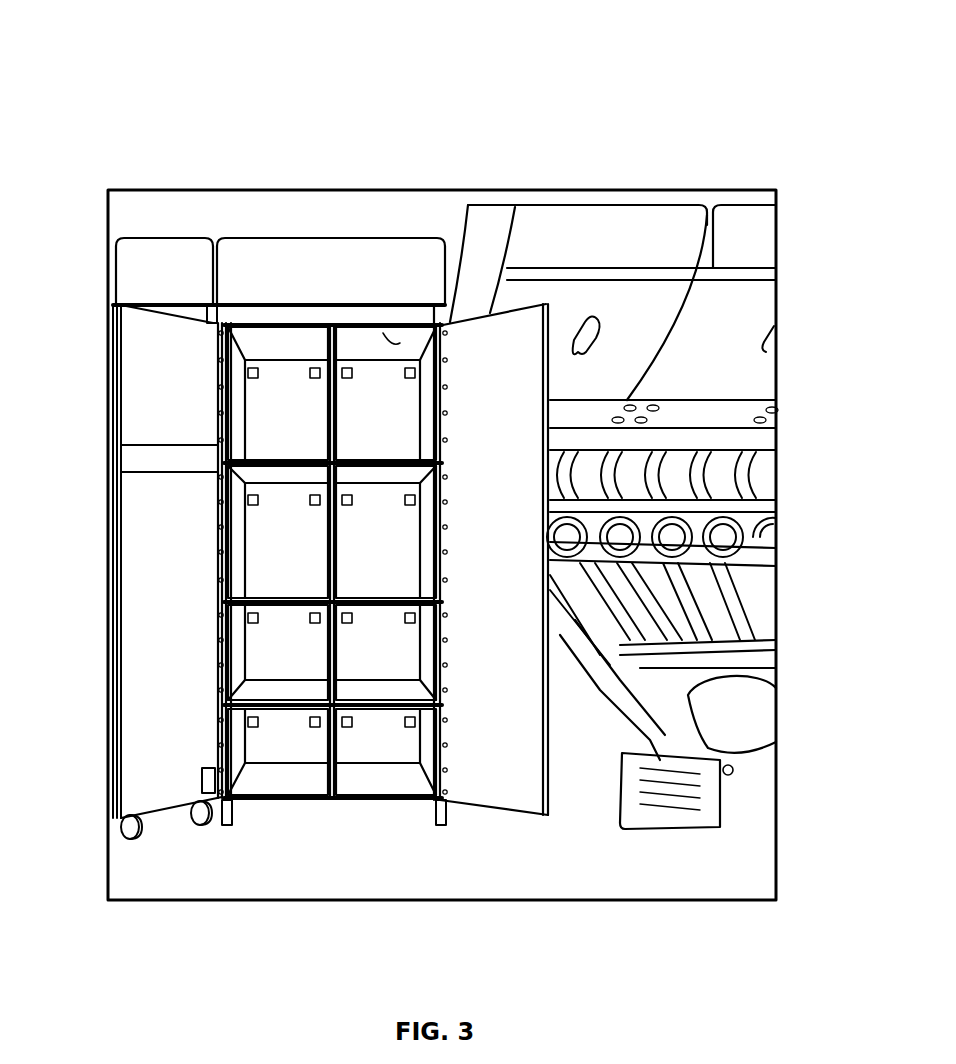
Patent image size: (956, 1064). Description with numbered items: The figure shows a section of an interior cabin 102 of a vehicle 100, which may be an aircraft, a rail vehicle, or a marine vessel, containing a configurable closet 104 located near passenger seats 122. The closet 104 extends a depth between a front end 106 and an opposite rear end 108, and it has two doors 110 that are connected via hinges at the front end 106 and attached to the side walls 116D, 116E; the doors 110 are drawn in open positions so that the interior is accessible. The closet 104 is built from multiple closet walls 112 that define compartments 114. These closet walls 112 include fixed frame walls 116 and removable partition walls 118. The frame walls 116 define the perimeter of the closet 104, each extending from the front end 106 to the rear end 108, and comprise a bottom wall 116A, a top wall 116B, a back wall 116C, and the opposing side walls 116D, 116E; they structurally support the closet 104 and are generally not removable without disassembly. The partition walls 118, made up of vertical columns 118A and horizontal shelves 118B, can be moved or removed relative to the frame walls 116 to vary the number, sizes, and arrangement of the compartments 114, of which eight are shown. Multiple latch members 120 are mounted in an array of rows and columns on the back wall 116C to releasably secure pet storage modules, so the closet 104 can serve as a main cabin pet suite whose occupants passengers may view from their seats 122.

The vehicle 100 is at (198, 62).
The interior cabin 102 is at (338, 200).
The configurable closet 104 is at (250, 315).
The front end 106 is at (263, 792).
The rear end 108 is at (277, 762).
The doors 110 is at (160, 555).
The closet walls 112 is at (328, 402).
The compartment 114 is at (232, 414).
The frame walls 116 is at (237, 387).
The bottom wall 116A is at (318, 775).
The top wall 116B is at (412, 373).
The back wall 116C is at (360, 745).
The side wall 116D is at (234, 632).
The side wall 116E is at (433, 430).
The partition walls 118 is at (278, 692).
The vertical columns 118A is at (330, 550).
The horizontal shelves 118B is at (275, 460).
The latch members 120 is at (418, 498).
The passenger seats 122 is at (692, 547).